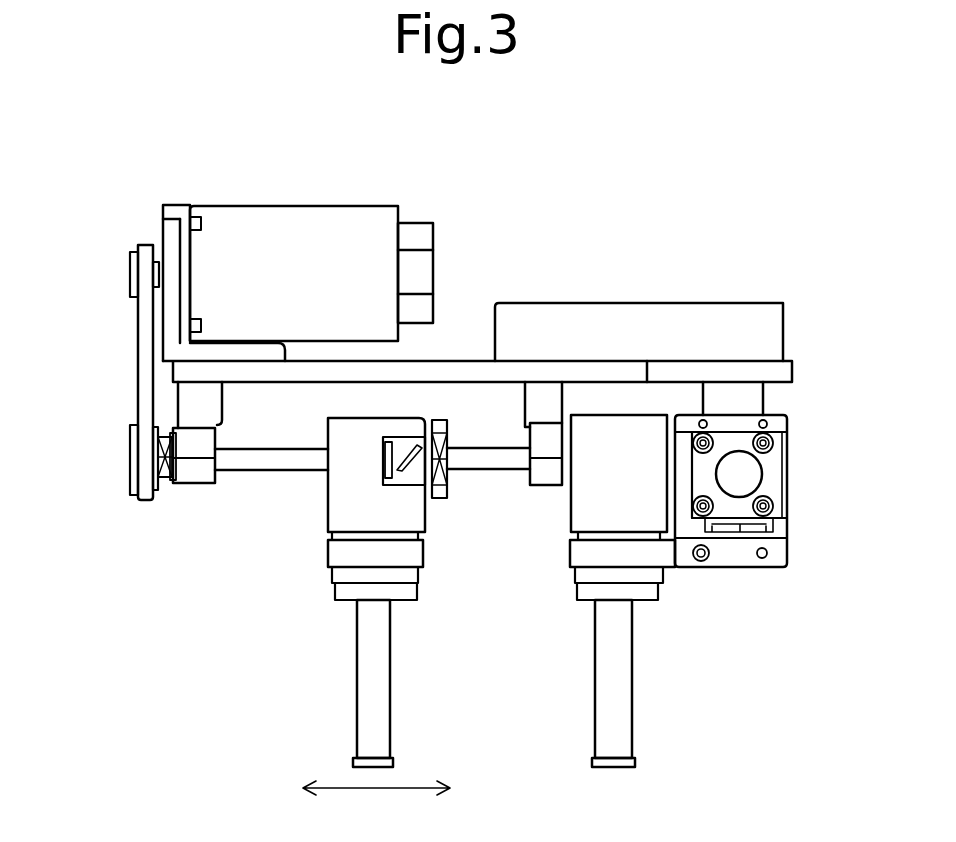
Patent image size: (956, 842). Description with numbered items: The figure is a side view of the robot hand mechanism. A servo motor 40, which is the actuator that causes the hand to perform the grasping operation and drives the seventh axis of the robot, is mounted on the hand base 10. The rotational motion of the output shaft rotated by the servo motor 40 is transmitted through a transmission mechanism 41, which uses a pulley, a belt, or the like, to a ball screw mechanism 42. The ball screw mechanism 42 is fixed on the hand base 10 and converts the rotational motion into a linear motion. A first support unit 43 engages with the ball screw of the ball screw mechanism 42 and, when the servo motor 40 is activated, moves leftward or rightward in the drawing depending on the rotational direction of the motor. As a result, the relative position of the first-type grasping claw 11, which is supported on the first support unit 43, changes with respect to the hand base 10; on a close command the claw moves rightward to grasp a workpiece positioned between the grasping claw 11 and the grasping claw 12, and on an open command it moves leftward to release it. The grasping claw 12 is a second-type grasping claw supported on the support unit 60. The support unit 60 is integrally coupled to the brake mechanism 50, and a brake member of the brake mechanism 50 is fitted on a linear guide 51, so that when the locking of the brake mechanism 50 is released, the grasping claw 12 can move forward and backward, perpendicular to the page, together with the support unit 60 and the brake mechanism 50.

The hand base 10 is at (455, 370).
The first-type grasping claw 11 is at (368, 720).
The second-type grasping claw 12 is at (617, 717).
The servo motor 40 is at (337, 233).
The transmission mechanism 41 is at (147, 347).
The ball screw mechanism 42 is at (257, 463).
The first support unit 43 is at (350, 502).
The brake mechanism 50 is at (796, 519).
The linear guide 51 is at (753, 470).
The support unit 60 is at (588, 493).